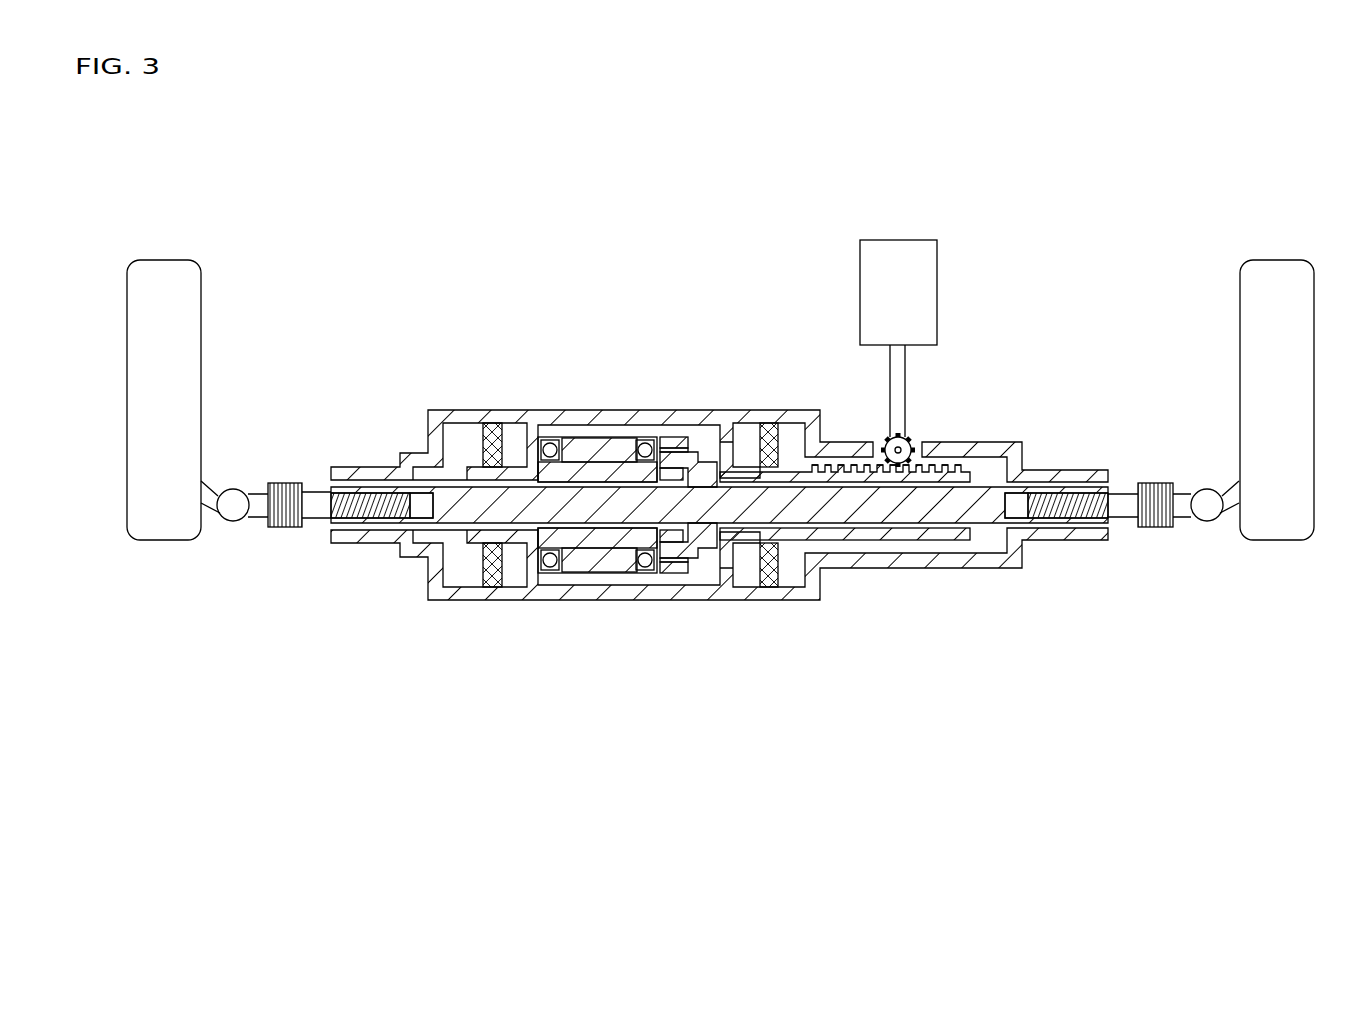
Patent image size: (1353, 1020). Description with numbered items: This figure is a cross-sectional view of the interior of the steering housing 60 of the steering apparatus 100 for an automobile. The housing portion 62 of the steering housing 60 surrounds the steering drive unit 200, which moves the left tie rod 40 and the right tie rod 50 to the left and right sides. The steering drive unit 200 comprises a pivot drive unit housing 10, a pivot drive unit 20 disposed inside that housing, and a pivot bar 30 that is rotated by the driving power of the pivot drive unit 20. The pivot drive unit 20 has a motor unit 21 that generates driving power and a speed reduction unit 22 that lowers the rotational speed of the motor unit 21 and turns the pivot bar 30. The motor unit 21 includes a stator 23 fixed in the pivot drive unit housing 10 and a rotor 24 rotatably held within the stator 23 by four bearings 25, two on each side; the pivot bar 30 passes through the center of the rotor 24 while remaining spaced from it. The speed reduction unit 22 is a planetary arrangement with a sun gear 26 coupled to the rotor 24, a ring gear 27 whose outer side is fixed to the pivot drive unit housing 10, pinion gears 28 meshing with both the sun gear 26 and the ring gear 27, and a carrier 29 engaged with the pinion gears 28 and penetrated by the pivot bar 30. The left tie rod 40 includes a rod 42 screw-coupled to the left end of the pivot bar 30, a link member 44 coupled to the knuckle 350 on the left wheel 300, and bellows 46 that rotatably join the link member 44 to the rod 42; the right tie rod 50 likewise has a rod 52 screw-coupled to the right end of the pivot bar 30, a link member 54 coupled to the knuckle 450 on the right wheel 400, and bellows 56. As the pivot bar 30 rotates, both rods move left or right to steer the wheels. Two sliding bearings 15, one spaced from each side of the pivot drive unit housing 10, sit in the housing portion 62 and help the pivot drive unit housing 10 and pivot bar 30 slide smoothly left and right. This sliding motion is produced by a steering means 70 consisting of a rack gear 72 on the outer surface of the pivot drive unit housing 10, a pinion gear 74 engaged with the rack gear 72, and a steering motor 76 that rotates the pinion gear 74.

The steering apparatus 100 is at (476, 273).
The left wheel 300 is at (188, 303).
The right wheel 400 is at (1262, 300).
The knuckle 350 is at (203, 481).
The knuckle 450 is at (1222, 490).
The pivot drive unit housing 10 is at (597, 433).
The steering drive unit 200 is at (513, 573).
The sliding bearing 15 is at (483, 440).
The pivot bar 30 is at (913, 505).
The steering housing 60 is at (818, 429).
The housing portion 62 is at (845, 534).
The steering means 70 is at (1077, 377).
The rack gear 72 is at (970, 465).
The pinion gear 74 is at (905, 440).
The steering motor 76 is at (923, 333).
The pivot drive unit 20 is at (732, 742).
The motor unit 21 is at (580, 695).
The speed reduction unit 22 is at (810, 680).
The stator 23 is at (578, 572).
The rotor 24 is at (590, 568).
The bearing 25 is at (543, 438).
The sun gear 26 is at (662, 567).
The ring gear 27 is at (677, 570).
The pinion gear 28 is at (698, 565).
The carrier 29 is at (720, 547).
The left tie rod 40 is at (358, 605).
The rod 42 is at (325, 519).
The link member 44 is at (235, 521).
The bellows 46 is at (283, 527).
The right tie rod 50 is at (1255, 605).
The rod 52 is at (1120, 520).
The link member 54 is at (1203, 521).
The bellows 56 is at (1153, 527).